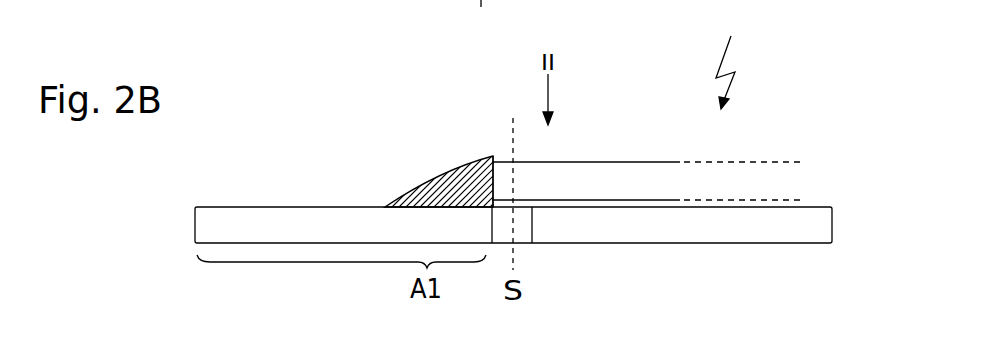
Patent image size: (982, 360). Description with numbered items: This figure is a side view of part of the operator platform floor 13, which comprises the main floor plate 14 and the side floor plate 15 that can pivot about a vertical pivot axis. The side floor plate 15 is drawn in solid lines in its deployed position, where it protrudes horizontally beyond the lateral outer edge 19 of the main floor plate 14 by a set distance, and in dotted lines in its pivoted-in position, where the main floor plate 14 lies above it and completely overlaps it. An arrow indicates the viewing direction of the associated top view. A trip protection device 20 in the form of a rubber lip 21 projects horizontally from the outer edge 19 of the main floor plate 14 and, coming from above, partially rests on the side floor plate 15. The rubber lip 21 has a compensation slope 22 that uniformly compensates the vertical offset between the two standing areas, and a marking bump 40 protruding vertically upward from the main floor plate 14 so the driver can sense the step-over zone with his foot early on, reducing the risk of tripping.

The operator platform floor 13 is at (729, 58).
The main floor plate 14 is at (613, 162).
The side floor plate 15 is at (307, 228).
The lateral outer edge 19 is at (480, 157).
The trip protection device 20 is at (495, 210).
The rubber lip 21 is at (450, 175).
The compensation slope 22 is at (425, 190).
The marking bump 40 is at (490, 160).